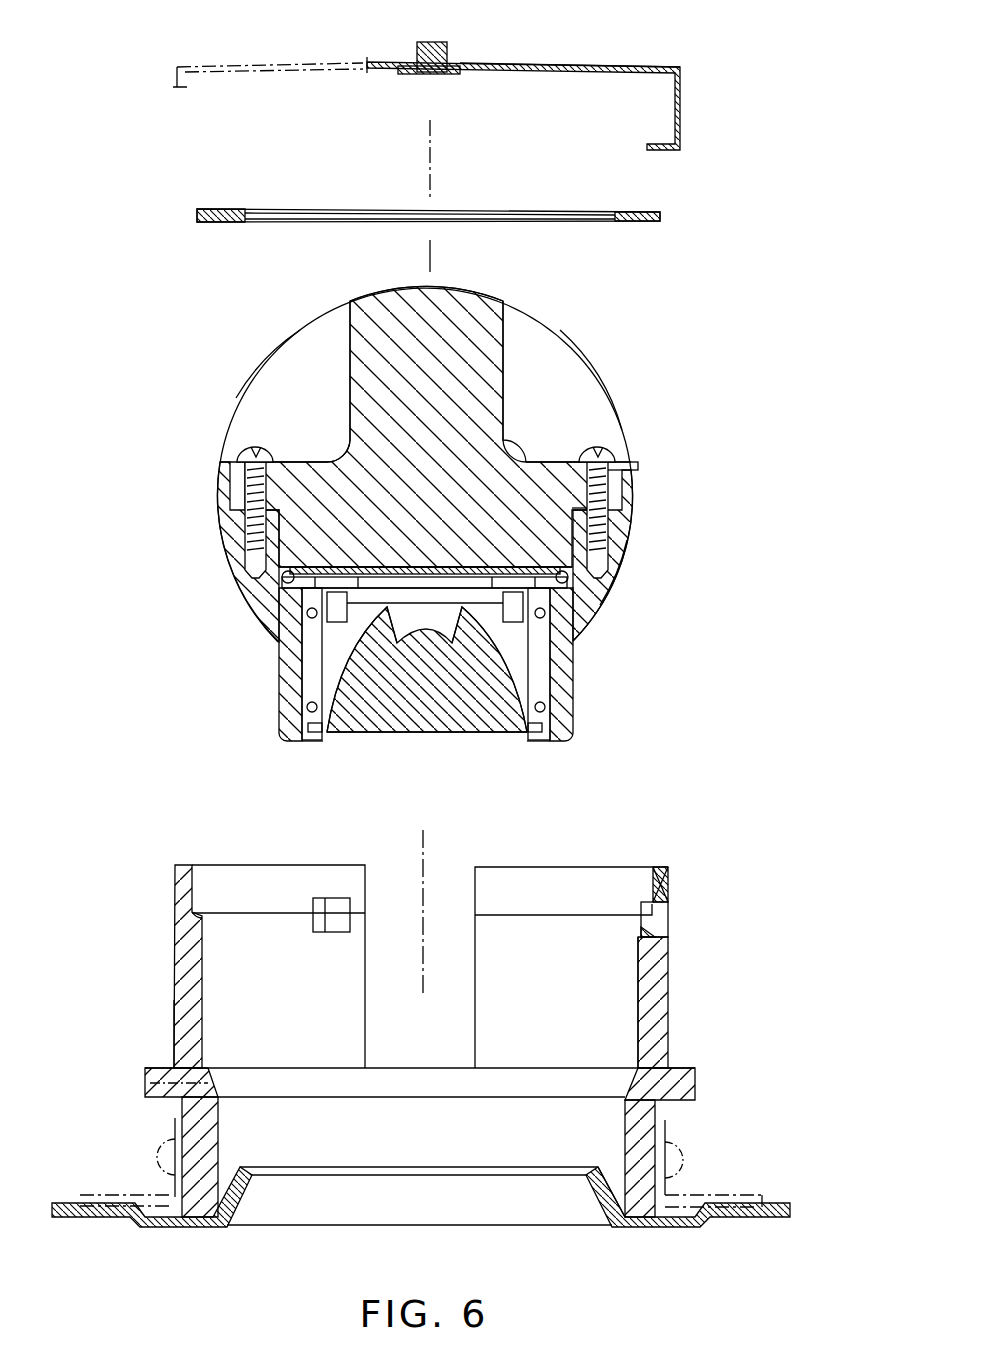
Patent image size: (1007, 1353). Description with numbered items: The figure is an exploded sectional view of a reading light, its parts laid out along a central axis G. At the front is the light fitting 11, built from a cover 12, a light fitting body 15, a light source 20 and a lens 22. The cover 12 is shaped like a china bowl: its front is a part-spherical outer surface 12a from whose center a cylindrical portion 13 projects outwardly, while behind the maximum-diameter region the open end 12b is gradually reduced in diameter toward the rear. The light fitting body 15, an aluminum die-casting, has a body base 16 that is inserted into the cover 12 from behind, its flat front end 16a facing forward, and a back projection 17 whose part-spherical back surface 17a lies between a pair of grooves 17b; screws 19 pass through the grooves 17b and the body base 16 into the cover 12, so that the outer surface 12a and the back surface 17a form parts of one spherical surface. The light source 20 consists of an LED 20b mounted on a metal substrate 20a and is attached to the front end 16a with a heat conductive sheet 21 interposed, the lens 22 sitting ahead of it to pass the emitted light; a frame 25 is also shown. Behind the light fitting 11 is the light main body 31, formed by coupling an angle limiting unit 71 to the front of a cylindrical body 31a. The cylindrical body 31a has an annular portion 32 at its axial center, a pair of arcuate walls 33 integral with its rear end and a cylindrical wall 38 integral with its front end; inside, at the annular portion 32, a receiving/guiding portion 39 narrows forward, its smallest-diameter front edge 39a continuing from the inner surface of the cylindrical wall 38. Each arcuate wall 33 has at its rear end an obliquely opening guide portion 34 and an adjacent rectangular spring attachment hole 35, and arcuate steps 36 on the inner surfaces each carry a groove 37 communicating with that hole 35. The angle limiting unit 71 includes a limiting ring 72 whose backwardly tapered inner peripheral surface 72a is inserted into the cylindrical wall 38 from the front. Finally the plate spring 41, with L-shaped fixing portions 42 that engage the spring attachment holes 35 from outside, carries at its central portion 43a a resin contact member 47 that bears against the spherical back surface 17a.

The light fitting 11 is at (430, 656).
The cover 12 is at (588, 623).
The outer surface 12a is at (626, 576).
The open end 12b is at (631, 478).
The cylindrical portion 13 is at (574, 702).
The light fitting body 15 is at (251, 383).
The body base 16 is at (303, 470).
The front end 16a is at (467, 565).
The back projection 17 is at (496, 370).
The back surface 17a is at (461, 288).
The grooves 17b is at (287, 356).
The screws 19 is at (255, 449).
The light source 20 is at (427, 701).
The metal substrate 20a is at (368, 590).
The LED 20b is at (423, 595).
The heat conductive sheet 21 is at (384, 567).
The lens 22 is at (352, 773).
The frame 25 is at (310, 675).
The light main body 31 is at (110, 1097).
The cylindrical body 31a is at (173, 1052).
The annular portion 32 is at (697, 1087).
The arcuate walls 33 is at (177, 889).
The guide portion 34 is at (667, 878).
The spring attachment hole 35 is at (335, 924).
The arcuate steps 36 is at (203, 917).
The groove 37 is at (655, 930).
The cylindrical wall 38 is at (660, 1160).
The receiving/guiding portion 39 is at (418, 1146).
The front edge 39a is at (352, 1100).
The plate spring 41 is at (688, 68).
The fixing portions 42 is at (660, 216).
The central portion 43a is at (492, 62).
The contact member 47 is at (432, 42).
The angle limiting unit 71 is at (70, 1188).
The limiting ring 72 is at (421, 1223).
The inner peripheral surface 72a is at (598, 1191).
The central axis G is at (443, 885).